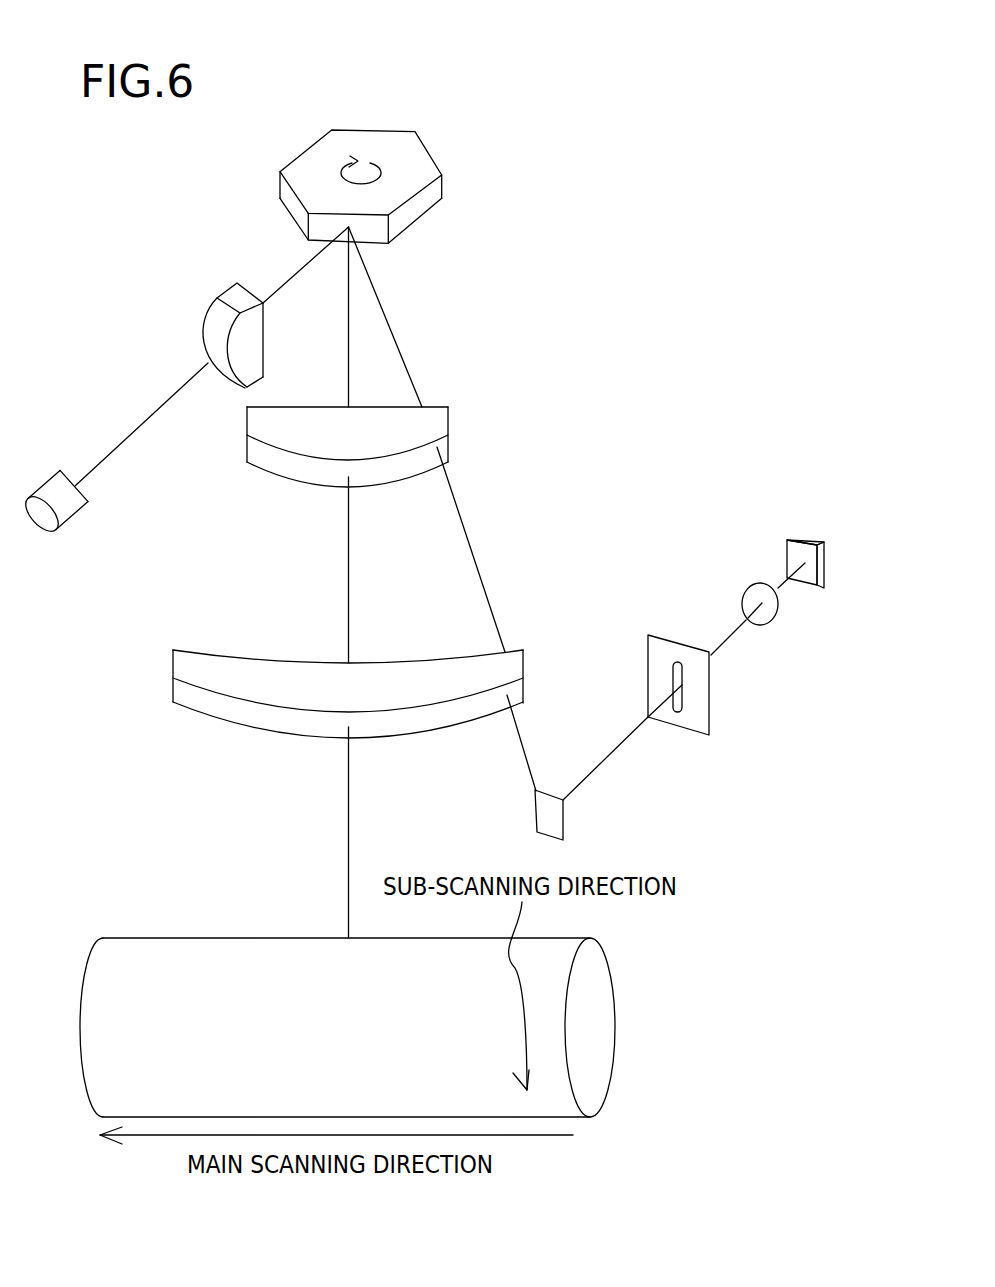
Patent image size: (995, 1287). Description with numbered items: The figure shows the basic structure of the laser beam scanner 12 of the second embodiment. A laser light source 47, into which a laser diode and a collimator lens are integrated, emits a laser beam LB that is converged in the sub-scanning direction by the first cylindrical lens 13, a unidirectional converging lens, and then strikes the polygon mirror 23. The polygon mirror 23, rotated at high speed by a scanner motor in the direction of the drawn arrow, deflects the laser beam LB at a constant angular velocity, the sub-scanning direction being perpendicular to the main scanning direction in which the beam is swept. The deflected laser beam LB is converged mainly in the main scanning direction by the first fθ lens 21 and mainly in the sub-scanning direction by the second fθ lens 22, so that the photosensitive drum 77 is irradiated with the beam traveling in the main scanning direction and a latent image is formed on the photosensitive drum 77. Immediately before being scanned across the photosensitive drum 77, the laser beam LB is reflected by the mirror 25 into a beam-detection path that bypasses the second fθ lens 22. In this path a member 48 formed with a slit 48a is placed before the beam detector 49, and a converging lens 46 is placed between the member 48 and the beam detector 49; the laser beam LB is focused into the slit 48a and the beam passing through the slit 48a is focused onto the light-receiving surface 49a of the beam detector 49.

The laser beam scanner 12 is at (588, 157).
The first cylindrical lens 13 is at (227, 295).
The first fθ lens 21 is at (433, 405).
The second fθ lens 22 is at (525, 678).
The polygon mirror 23 is at (428, 146).
The mirror 25 is at (567, 823).
The converging lens 46 is at (778, 608).
The laser light source 47 is at (72, 520).
The member 48 is at (745, 733).
The slit 48a is at (690, 708).
The beam detector 49 is at (743, 525).
The light-receiving surface 49a is at (740, 551).
The photosensitive drum 77 is at (147, 938).
The laser beam LB is at (146, 420).